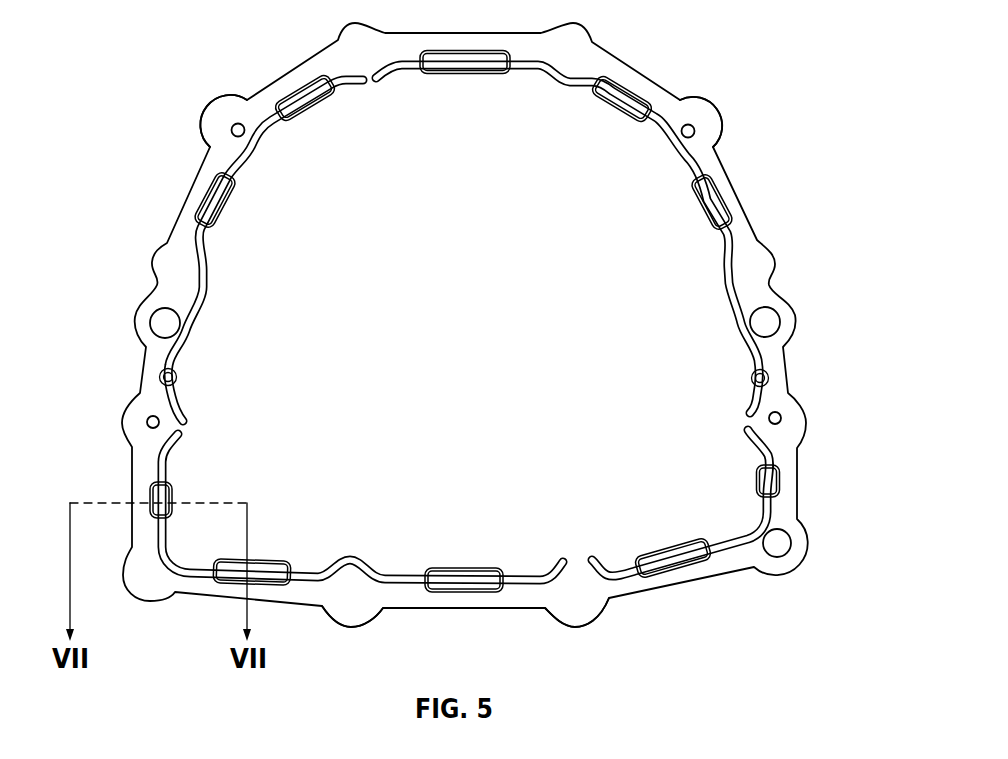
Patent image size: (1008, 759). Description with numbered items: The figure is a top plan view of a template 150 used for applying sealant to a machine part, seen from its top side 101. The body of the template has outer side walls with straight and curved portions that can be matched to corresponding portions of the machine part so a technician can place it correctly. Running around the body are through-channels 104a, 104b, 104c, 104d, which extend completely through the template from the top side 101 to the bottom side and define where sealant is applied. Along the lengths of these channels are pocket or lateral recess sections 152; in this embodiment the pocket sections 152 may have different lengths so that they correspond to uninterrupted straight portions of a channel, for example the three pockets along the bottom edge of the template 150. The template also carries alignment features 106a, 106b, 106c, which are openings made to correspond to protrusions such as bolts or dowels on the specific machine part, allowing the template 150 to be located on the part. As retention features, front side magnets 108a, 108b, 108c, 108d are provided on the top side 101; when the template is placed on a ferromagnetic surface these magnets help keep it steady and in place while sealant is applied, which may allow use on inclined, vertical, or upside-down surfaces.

The top side 101 is at (484, 334).
The template 150 is at (676, 31).
The pocket sections 152 is at (310, 121).
The through-channel 104a is at (267, 117).
The through-channel 104b is at (697, 147).
The through-channel 104c is at (615, 577).
The through-channel 104d is at (333, 581).
The alignment feature 106a is at (157, 325).
The alignment feature 106b is at (777, 323).
The alignment feature 106c is at (775, 547).
The front side magnet 108a is at (233, 127).
The front side magnet 108b is at (693, 125).
The front side magnet 108c is at (781, 420).
The front side magnet 108d is at (150, 424).